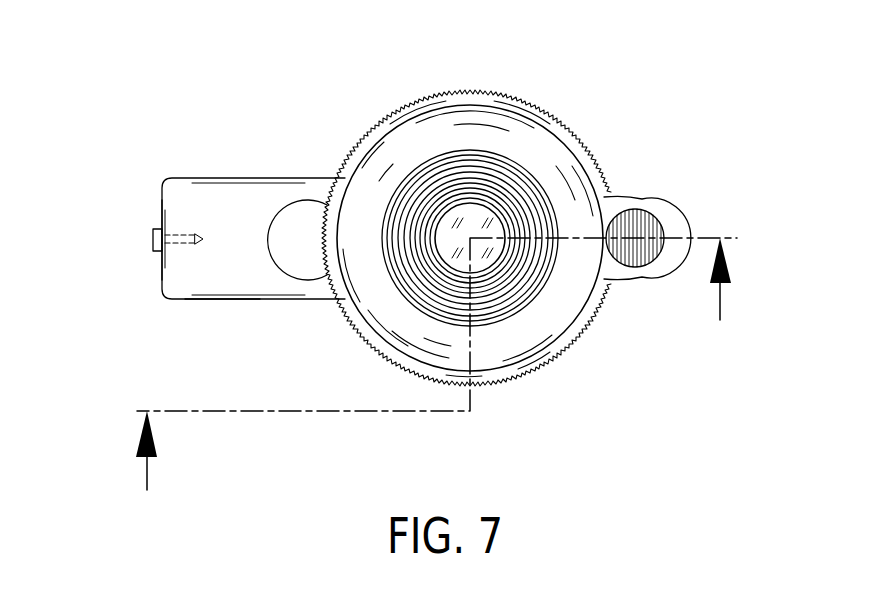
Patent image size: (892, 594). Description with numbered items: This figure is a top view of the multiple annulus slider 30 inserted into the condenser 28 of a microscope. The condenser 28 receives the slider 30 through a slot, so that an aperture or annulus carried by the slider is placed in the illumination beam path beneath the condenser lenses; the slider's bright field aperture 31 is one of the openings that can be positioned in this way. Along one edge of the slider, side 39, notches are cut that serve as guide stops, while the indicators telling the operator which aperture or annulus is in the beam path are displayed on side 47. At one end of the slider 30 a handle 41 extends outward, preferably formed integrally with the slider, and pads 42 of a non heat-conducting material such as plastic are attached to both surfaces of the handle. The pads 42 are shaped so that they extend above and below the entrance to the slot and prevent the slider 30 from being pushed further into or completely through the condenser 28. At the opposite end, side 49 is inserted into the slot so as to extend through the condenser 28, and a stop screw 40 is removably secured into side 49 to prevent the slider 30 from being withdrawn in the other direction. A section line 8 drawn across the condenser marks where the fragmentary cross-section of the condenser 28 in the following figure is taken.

The slider 30 is at (219, 214).
The side 39 is at (210, 172).
The stop screw 40 is at (154, 230).
The side 49 is at (156, 277).
The side 47 is at (191, 308).
The bright field aperture 31 is at (308, 268).
The condenser 28 is at (568, 128).
The handle 41 is at (650, 233).
The pads 42 is at (648, 265).
The section line 8- 8 is at (431, 364).